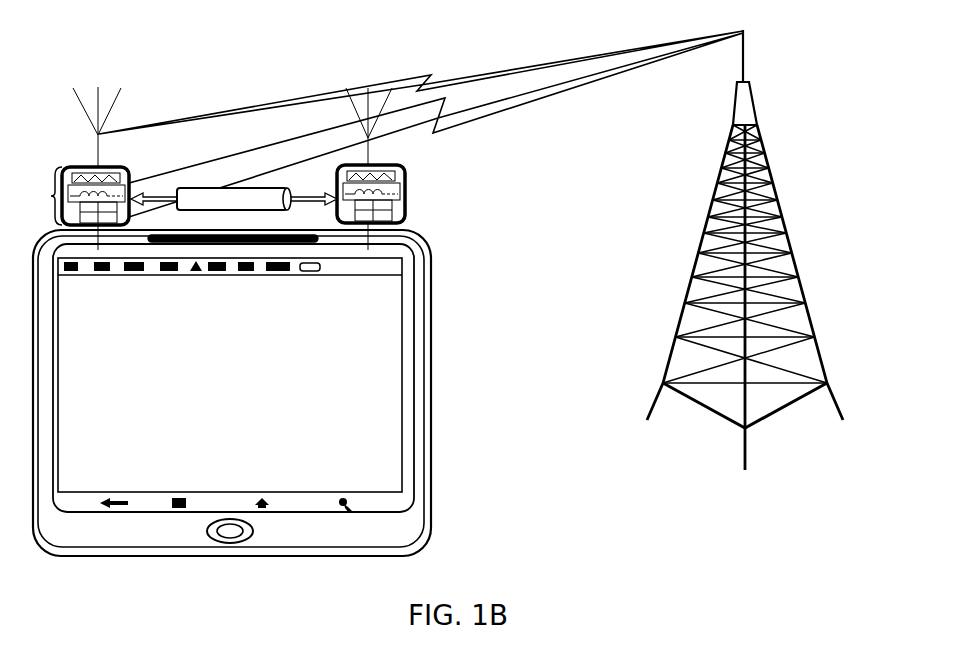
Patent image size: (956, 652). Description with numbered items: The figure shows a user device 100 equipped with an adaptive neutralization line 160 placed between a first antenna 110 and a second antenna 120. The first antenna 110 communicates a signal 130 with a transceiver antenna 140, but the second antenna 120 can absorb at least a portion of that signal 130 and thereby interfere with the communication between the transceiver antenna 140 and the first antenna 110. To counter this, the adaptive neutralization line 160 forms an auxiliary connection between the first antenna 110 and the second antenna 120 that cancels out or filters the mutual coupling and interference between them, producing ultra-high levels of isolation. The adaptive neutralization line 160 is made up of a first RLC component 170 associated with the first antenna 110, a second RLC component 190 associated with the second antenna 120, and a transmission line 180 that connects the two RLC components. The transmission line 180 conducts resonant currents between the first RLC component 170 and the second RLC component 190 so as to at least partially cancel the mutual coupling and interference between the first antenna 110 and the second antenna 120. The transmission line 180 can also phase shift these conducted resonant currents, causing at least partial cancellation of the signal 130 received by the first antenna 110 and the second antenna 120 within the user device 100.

The user device 100 is at (232, 393).
The first antenna 110 is at (72, 93).
The second antenna 120 is at (350, 88).
The signal 130 is at (563, 92).
The transceiver antenna 140 is at (745, 271).
The adaptive neutralization line 160 is at (104, 183).
The first RLC component 170 is at (130, 168).
The transmission line 180 is at (234, 199).
The second RLC component 190 is at (408, 195).